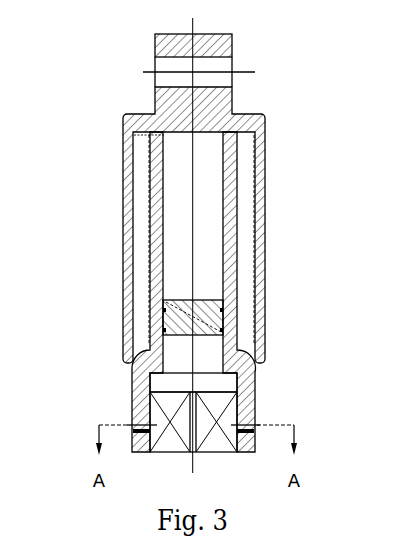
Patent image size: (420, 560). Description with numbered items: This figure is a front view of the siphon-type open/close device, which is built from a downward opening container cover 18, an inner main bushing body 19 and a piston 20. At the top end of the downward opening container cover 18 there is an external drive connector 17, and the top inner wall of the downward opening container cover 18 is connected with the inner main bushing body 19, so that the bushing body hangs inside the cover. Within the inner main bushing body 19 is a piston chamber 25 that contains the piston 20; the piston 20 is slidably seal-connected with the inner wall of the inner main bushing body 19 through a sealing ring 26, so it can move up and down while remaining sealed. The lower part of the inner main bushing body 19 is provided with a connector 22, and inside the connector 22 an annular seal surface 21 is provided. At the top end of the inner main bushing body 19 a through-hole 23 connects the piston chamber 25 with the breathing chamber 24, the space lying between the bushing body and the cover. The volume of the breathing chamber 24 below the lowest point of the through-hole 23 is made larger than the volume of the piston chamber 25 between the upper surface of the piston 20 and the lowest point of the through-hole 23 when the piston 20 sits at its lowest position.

The external drive connector 17 is at (213, 47).
The downward opening container cover 18 is at (261, 133).
The inner main bushing body 19 is at (232, 237).
The piston 20 is at (209, 320).
The annular seal surface 21 is at (221, 385).
The connector 22 is at (229, 431).
The through-hole 23 is at (157, 135).
The breathing chamber 24 is at (139, 178).
The piston chamber 25 is at (181, 233).
The sealing ring 26 is at (163, 310).